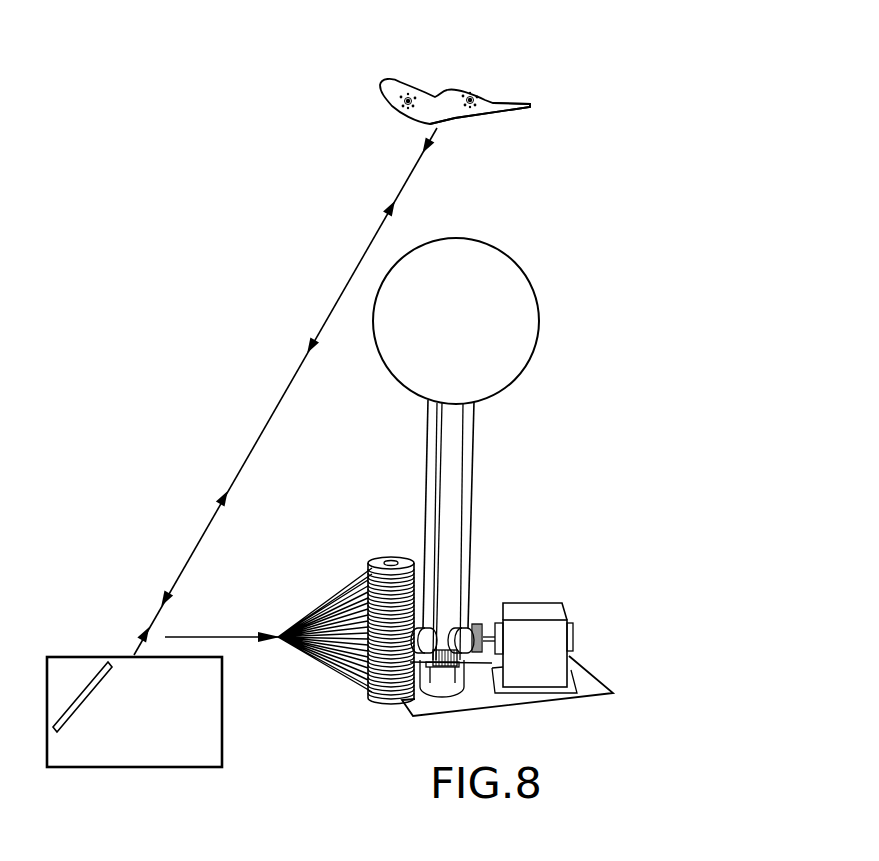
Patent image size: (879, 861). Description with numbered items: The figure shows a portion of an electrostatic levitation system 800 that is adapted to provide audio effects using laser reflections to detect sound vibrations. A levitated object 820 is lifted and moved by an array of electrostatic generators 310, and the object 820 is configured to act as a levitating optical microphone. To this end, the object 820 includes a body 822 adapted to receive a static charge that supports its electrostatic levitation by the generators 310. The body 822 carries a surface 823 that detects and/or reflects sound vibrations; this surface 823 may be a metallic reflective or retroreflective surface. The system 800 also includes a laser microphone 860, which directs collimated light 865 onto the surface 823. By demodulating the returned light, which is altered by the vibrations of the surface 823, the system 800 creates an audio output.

The electrostatic levitation system 800 is at (700, 140).
The levitated object 820 is at (484, 68).
The body 822 is at (505, 90).
The surface 823 is at (463, 122).
The collimated light 865 is at (200, 546).
The laser microphone 860 is at (112, 768).
The array of electrostatic generators 310 is at (364, 752).